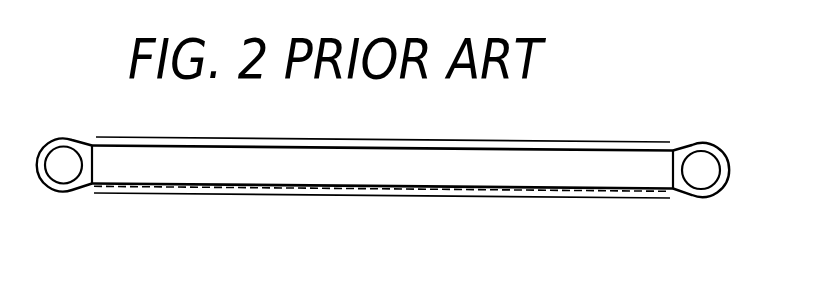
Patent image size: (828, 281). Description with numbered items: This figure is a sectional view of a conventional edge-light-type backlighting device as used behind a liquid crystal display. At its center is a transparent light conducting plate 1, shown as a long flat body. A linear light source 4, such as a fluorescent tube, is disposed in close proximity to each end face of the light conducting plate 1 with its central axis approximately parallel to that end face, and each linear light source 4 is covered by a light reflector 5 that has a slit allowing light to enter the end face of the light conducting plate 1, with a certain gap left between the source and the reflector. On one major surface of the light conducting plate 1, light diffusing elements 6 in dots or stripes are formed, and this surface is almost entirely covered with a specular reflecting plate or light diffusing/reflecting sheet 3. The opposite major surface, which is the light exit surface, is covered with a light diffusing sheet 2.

The light conducting plate 1 is at (521, 160).
The light diffusing sheet 2 is at (257, 138).
The light diffusing/reflecting sheet 3 is at (258, 194).
The linear light source 4 is at (62, 158).
The light reflector 5 is at (62, 192).
The light diffusing elements 6 is at (545, 190).